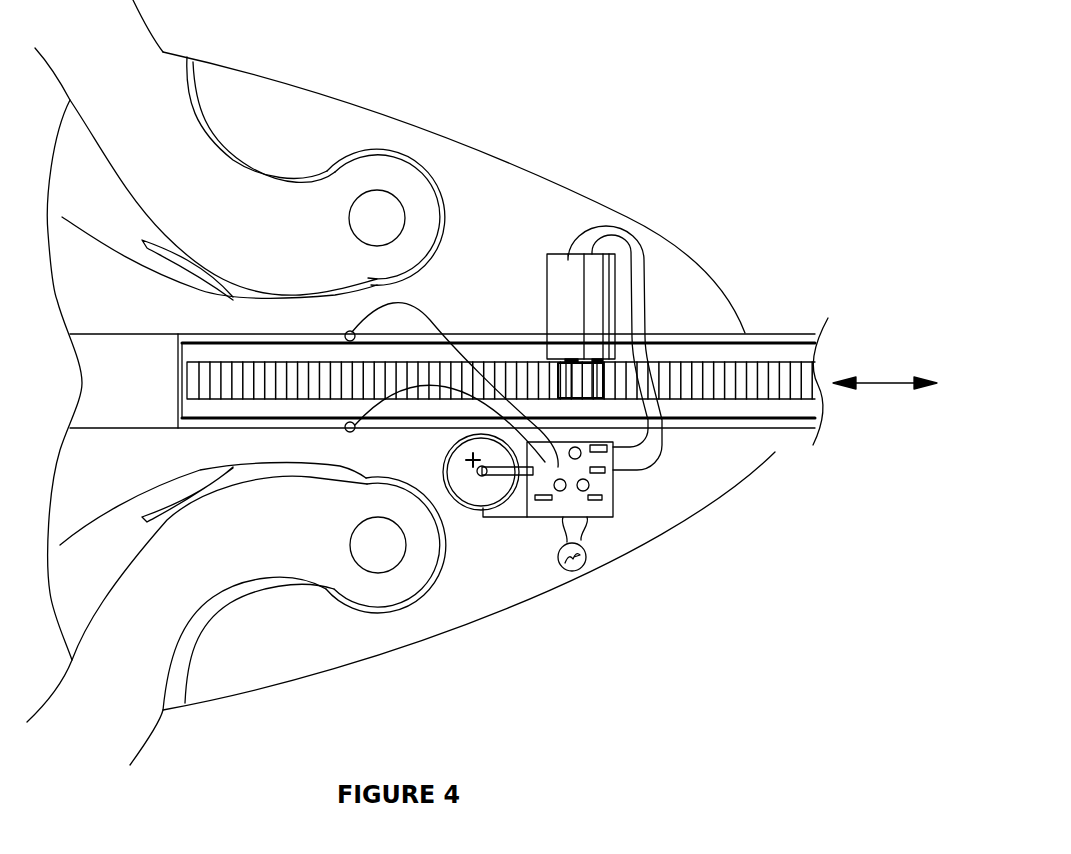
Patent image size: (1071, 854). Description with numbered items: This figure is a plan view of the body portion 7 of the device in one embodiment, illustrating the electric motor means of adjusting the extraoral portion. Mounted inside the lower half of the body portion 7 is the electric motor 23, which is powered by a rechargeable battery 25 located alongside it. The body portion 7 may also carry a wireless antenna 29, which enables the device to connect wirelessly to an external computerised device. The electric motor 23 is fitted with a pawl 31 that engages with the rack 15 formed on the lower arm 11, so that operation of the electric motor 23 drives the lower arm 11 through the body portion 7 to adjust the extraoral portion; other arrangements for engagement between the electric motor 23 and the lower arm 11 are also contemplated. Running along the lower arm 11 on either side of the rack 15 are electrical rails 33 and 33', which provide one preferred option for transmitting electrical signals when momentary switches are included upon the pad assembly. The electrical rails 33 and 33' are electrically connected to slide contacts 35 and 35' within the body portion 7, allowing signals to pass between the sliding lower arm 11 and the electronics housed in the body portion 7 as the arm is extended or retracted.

The body portion 7 is at (470, 183).
The lower arm 11 is at (776, 428).
The rack 15 is at (773, 377).
The electric motor 23 is at (557, 285).
The rechargeable battery 25 is at (472, 492).
The wireless antenna 29 is at (585, 555).
The pawl 31 is at (588, 375).
The electrical rail 33 is at (442, 283).
The electrical rail 33' is at (442, 490).
The slide contact 35 is at (400, 241).
The slide contact 35' is at (383, 575).